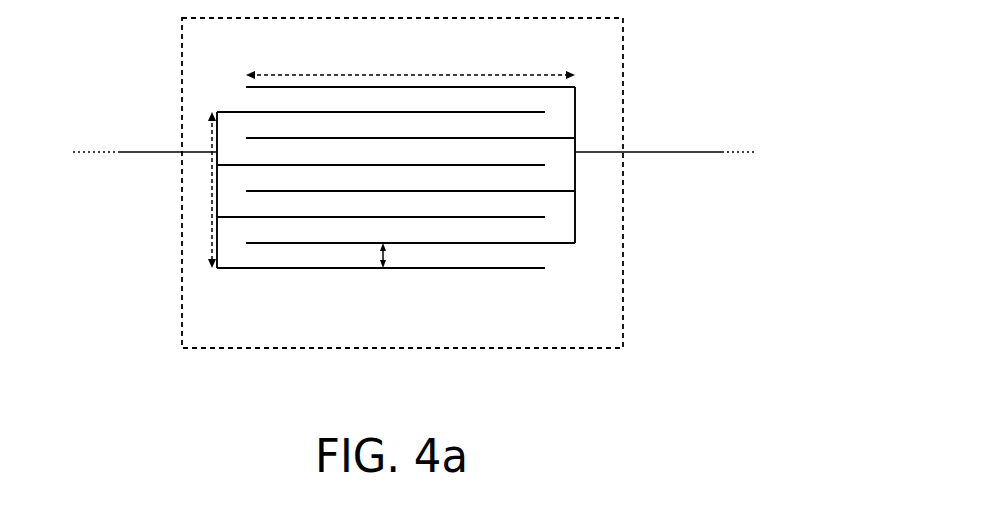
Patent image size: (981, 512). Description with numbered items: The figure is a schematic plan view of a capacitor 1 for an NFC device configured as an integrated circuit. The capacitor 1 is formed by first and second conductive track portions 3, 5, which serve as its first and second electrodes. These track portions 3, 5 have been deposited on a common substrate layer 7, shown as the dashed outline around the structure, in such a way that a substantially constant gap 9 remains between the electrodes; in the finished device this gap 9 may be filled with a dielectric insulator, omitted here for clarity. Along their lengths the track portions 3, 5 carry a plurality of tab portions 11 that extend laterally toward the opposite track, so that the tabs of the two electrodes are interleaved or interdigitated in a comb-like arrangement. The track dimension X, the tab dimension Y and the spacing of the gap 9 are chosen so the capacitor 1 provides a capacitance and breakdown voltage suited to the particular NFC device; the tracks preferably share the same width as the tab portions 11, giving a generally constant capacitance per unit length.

The capacitor 1 is at (150, 66).
The first conductive track portion 3 is at (138, 152).
The second conductive track portion 5 is at (648, 152).
The substrate layer 7 is at (575, 328).
The gap 9 is at (385, 257).
The tab portions 11 is at (278, 270).